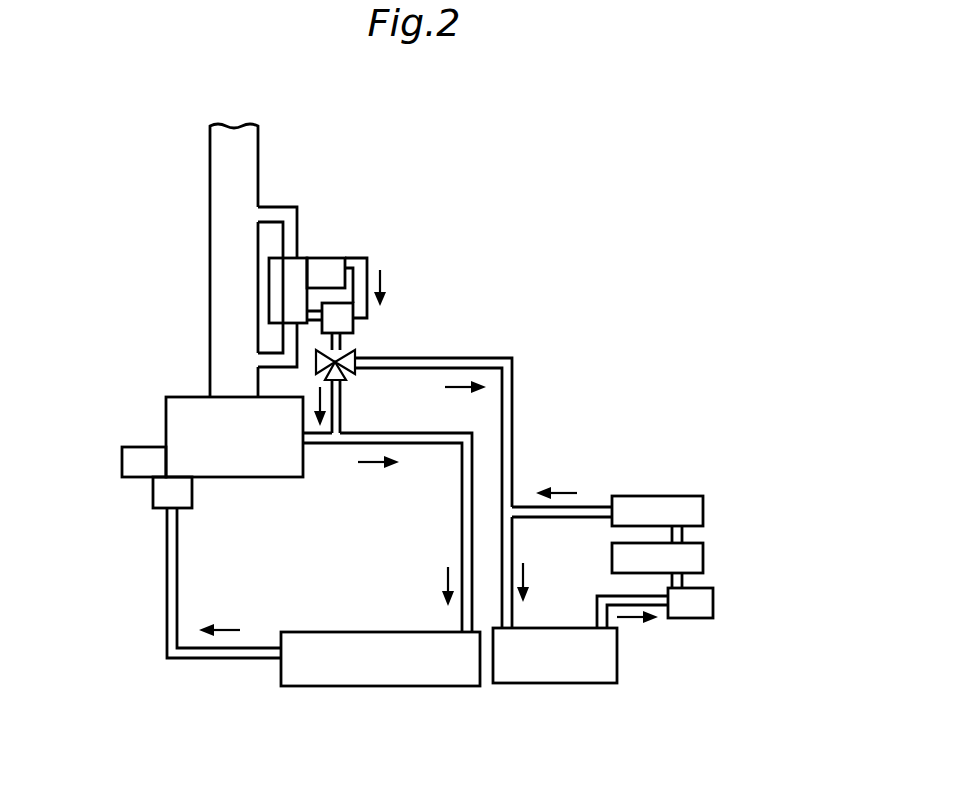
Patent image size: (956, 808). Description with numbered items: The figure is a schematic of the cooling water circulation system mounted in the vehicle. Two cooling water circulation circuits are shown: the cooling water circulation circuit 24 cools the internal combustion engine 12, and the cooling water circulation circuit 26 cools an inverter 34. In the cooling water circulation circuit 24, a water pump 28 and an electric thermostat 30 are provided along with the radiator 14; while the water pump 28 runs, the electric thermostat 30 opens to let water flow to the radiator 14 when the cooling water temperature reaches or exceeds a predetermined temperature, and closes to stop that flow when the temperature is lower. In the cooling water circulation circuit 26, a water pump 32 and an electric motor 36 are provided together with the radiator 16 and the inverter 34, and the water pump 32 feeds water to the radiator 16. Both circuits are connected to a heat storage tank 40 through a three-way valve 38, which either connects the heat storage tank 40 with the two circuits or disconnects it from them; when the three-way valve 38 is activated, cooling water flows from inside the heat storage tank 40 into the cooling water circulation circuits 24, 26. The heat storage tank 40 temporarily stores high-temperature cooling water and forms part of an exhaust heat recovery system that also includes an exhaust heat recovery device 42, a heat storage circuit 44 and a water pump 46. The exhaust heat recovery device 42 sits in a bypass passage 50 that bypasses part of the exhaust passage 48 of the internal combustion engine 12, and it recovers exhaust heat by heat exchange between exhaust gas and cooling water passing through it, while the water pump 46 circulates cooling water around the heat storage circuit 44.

The internal combustion engine 12 is at (190, 397).
The radiator 14 is at (340, 632).
The radiator 16 is at (532, 628).
The cooling water circulation circuit 24 is at (197, 660).
The cooling water circulation circuit 26 is at (590, 507).
The water pump 28 is at (122, 450).
The electric thermostat 30 is at (153, 505).
The water pump 32 is at (713, 603).
The inverter 34 is at (703, 558).
The electric motor 36 is at (703, 508).
The three-way valve 38 is at (347, 376).
The heat storage tank 40 is at (353, 325).
The exhaust heat recovery device 42 is at (302, 258).
The heat storage circuit 44 is at (362, 258).
The water pump 46 is at (325, 258).
The exhaust passage 48 is at (212, 275).
The bypass passage 50 is at (262, 205).